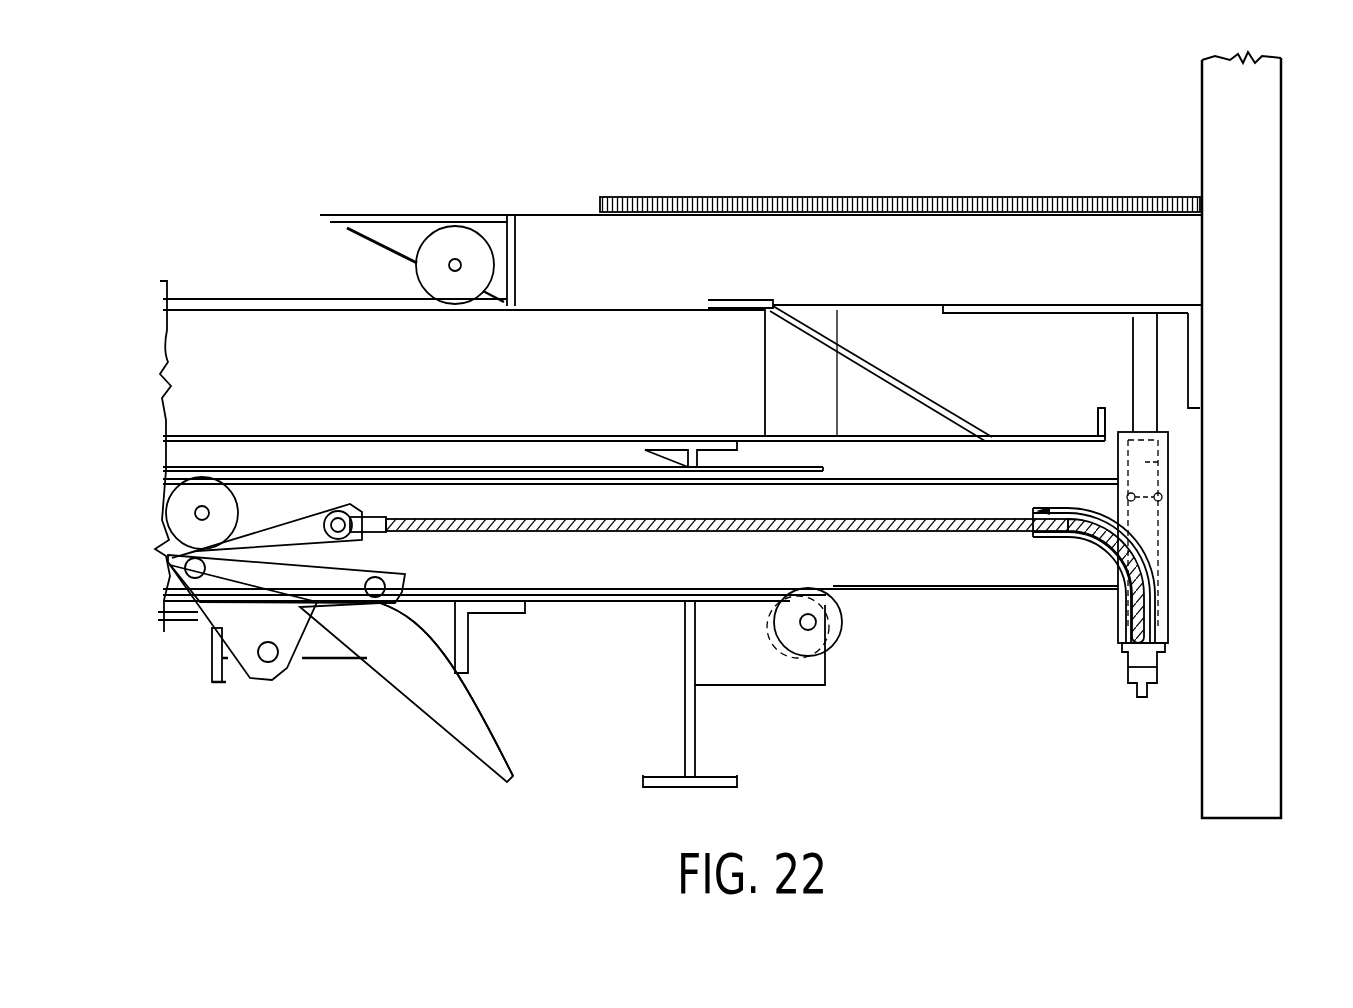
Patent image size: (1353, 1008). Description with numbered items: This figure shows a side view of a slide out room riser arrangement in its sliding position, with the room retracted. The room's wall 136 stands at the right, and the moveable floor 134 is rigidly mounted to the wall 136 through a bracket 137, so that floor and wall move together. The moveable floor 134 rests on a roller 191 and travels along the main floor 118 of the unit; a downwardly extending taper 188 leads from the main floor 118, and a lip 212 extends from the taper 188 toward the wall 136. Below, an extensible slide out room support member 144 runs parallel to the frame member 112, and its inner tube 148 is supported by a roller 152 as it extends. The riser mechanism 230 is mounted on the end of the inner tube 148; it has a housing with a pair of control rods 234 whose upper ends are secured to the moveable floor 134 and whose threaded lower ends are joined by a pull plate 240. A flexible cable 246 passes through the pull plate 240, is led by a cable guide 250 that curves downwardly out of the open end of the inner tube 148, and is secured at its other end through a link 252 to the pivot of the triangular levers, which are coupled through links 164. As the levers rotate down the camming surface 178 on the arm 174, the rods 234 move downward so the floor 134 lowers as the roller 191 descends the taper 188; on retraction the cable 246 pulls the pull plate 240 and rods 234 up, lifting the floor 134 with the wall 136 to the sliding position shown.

The frame member 112 is at (697, 730).
The main floor 118 is at (255, 325).
The moveable floor 134 is at (898, 226).
The wall 136 is at (1253, 126).
The bracket 137 is at (1195, 330).
The extensible slide out room support member 144 is at (578, 612).
The inner tube 148 is at (1000, 590).
The roller 152 is at (843, 630).
The link 164 is at (296, 641).
The arm 174 is at (455, 730).
The camming surface 178 is at (480, 697).
The taper 188 is at (907, 380).
The roller 191 is at (455, 240).
The lip 212 is at (1047, 428).
The riser mechanism 230 is at (1180, 462).
The control rod 234 is at (1157, 378).
The pull plate 240 is at (1128, 684).
The flexible cable 246 is at (560, 519).
The cable guide 250 is at (1165, 556).
The link 252 is at (288, 530).